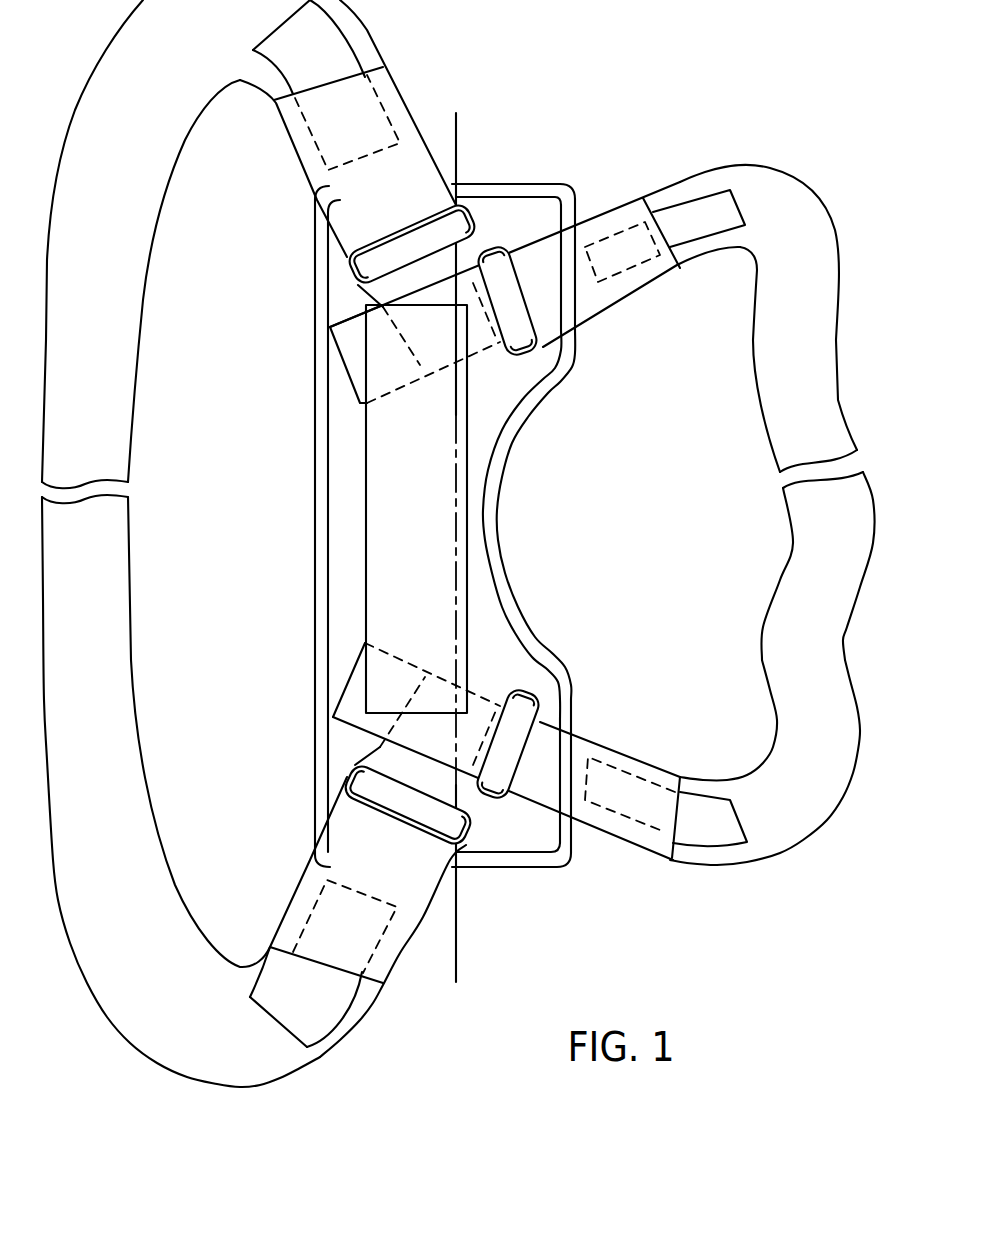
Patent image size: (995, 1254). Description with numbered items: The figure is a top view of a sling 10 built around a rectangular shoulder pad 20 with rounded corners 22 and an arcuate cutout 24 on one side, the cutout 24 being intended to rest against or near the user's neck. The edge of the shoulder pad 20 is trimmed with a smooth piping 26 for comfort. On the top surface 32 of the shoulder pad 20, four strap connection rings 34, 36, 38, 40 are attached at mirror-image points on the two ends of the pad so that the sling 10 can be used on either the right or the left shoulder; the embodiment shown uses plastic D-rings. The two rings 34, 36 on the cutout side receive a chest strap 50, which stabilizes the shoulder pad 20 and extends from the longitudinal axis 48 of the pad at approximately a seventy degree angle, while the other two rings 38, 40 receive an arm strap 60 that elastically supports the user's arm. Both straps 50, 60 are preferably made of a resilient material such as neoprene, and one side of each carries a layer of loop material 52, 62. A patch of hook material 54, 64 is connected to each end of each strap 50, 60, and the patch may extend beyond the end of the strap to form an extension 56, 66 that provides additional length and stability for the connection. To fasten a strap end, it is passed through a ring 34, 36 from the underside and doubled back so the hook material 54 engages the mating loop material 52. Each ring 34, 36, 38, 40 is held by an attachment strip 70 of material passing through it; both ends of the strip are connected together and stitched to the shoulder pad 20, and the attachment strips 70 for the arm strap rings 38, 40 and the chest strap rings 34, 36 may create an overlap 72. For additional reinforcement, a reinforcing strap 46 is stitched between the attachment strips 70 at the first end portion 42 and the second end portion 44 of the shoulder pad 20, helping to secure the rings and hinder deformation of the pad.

The sling 10 is at (712, 72).
The shoulder pad 20 is at (443, 509).
The rounded corners 22 is at (576, 192).
The arcuate cutout 24 is at (512, 607).
The smooth piping 26 is at (578, 349).
The top surface 32 is at (479, 400).
The strap connection ring 34 is at (553, 657).
The strap connection ring 36 is at (553, 388).
The strap connection ring 38 is at (350, 767).
The strap connection ring 40 is at (347, 270).
The first end portion 42 is at (514, 833).
The second end portion 44 is at (504, 212).
The reinforcing strap 46 is at (398, 485).
The longitudinal axis 48 is at (457, 957).
The chest strap 50 is at (748, 818).
The loop material 52 is at (804, 627).
The patch of hook material 54 is at (611, 258).
The extension 56 is at (679, 233).
The arm strap 60 is at (66, 615).
The loop material 62 is at (138, 970).
The patch of hook material 64 is at (331, 123).
The extension 66 is at (304, 58).
The attachment strip 70 is at (336, 353).
The overlap 72 is at (416, 340).